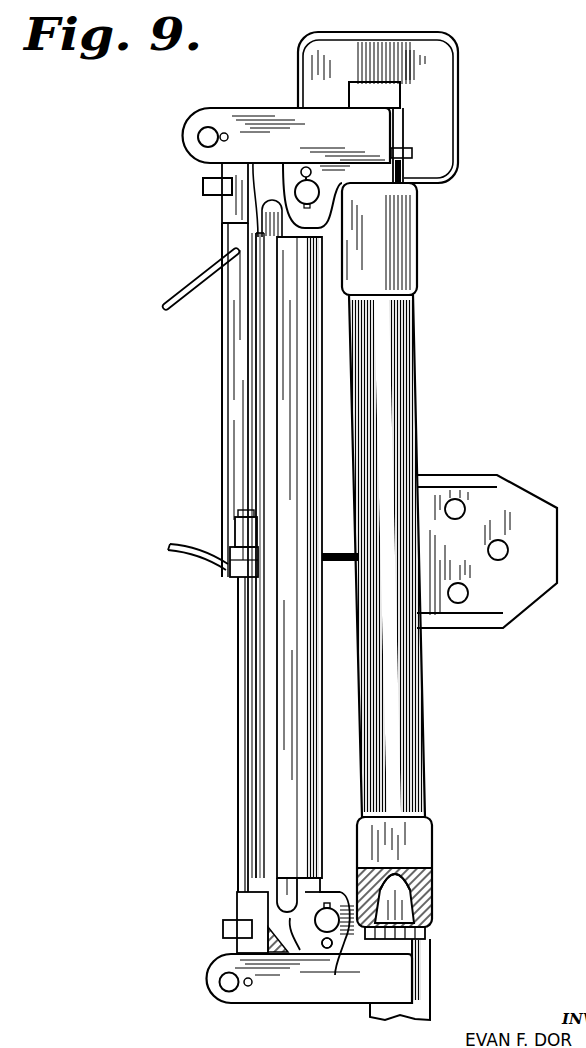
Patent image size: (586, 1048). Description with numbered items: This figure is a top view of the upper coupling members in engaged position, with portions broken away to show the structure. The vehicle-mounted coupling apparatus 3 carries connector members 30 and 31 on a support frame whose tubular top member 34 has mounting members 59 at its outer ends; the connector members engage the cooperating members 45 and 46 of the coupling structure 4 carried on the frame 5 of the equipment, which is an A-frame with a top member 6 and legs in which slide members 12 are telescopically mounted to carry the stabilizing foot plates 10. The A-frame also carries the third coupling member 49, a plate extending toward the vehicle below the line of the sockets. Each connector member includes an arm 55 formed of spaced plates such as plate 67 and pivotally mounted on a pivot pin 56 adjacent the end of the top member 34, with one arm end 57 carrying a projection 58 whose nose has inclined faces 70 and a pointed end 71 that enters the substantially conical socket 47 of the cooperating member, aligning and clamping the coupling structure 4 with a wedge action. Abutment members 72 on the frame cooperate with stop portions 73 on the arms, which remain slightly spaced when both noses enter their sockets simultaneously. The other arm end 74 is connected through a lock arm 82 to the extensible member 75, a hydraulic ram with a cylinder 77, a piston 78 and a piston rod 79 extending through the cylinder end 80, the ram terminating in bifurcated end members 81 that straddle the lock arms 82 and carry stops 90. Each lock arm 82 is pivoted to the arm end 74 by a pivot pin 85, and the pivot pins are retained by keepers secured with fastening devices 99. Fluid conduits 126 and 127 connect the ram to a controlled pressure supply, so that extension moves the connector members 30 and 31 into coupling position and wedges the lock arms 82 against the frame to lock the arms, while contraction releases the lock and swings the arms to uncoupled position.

The stabilizing foot plate 10 is at (432, 38).
The slide member 12 is at (393, 100).
The coupling apparatus 3 is at (281, 104).
The connector member 31 is at (400, 173).
The cooperating member 46 is at (417, 250).
The coupling structure 4 is at (417, 282).
The frame 5 is at (412, 400).
The top member 6 is at (403, 376).
The third coupling member 49 is at (345, 552).
The extensible member 75 is at (228, 372).
The cylinder 77 is at (237, 398).
The top member 34 is at (307, 657).
The fluid conduit 126 is at (190, 282).
The piston 78 is at (234, 530).
The cylinder end 80 is at (236, 578).
The fluid conduit 127 is at (180, 546).
The piston rod 79 is at (244, 672).
The cooperating member 45 is at (432, 867).
The inclined face 70 is at (420, 916).
The socket 47 is at (410, 905).
The projection 58 is at (373, 866).
The pointed end 71 is at (403, 870).
The connector member 30 is at (425, 934).
The arm end 57 is at (412, 1003).
The other arm end 74 is at (207, 985).
The pivot pin 85 is at (228, 993).
The fastening device 99 is at (247, 984).
The plate 67 is at (306, 995).
The arm 55 is at (327, 991).
The bifurcated end member 81 is at (237, 908).
The stop 90 is at (223, 928).
The lock arm 82 is at (282, 961).
The abutment member 72 is at (284, 892).
The stop portion 73 is at (330, 890).
The mounting member 59 is at (290, 917).
The pivot pin 56 is at (333, 944).